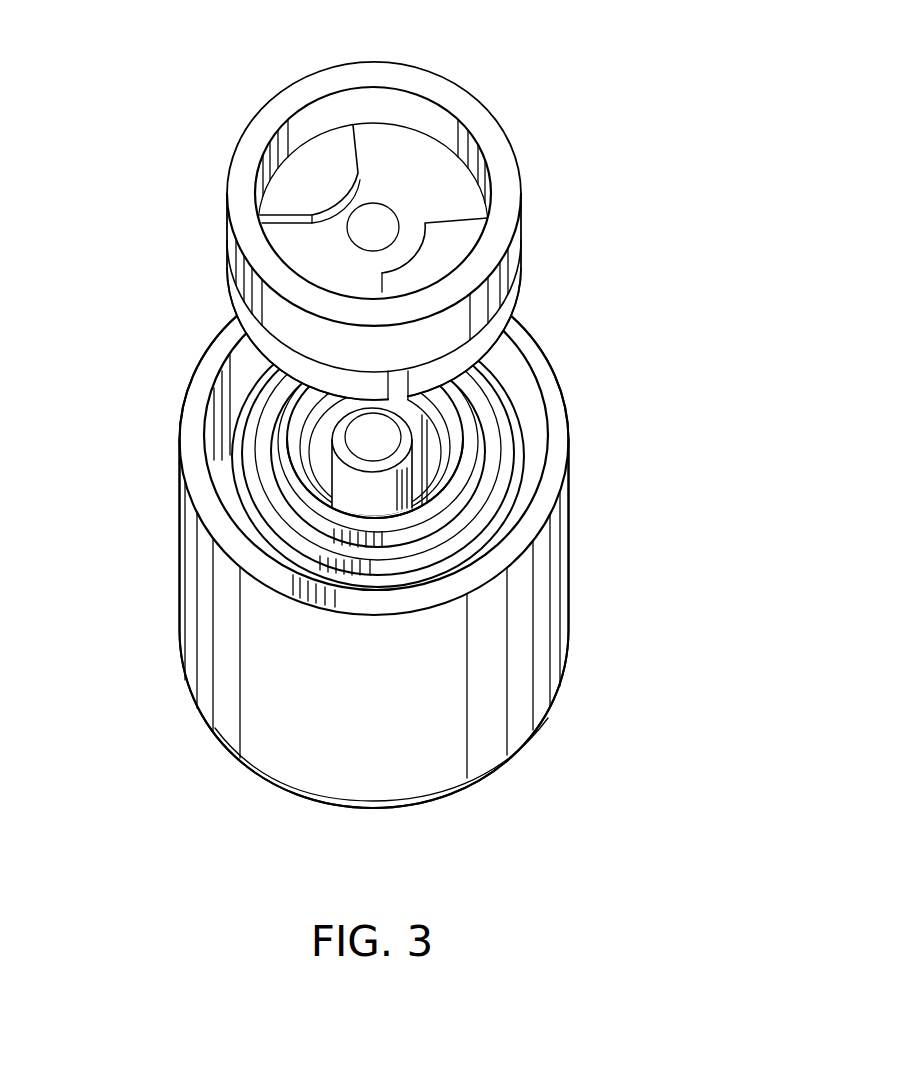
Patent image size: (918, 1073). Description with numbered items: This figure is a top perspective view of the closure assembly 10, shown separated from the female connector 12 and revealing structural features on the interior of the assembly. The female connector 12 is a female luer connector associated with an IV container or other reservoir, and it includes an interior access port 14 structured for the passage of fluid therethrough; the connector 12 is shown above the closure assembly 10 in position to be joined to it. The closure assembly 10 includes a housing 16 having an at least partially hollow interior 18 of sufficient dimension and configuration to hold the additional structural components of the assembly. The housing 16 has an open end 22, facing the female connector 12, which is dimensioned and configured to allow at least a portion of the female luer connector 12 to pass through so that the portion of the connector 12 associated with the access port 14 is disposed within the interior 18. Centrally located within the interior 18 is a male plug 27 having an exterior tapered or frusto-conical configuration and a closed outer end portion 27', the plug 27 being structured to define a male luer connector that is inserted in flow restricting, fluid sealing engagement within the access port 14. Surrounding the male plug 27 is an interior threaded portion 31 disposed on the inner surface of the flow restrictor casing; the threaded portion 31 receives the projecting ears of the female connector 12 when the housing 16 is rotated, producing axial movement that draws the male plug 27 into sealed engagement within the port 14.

The closure assembly 10 is at (630, 409).
The female connector 12 is at (585, 197).
The access port 14 is at (378, 220).
The housing 16 is at (549, 668).
The hollow interior 18 is at (220, 408).
The open end 22 is at (223, 342).
The male plug 27 is at (493, 485).
The closed outer end portion 27' is at (234, 472).
The threaded portion 31 is at (450, 437).